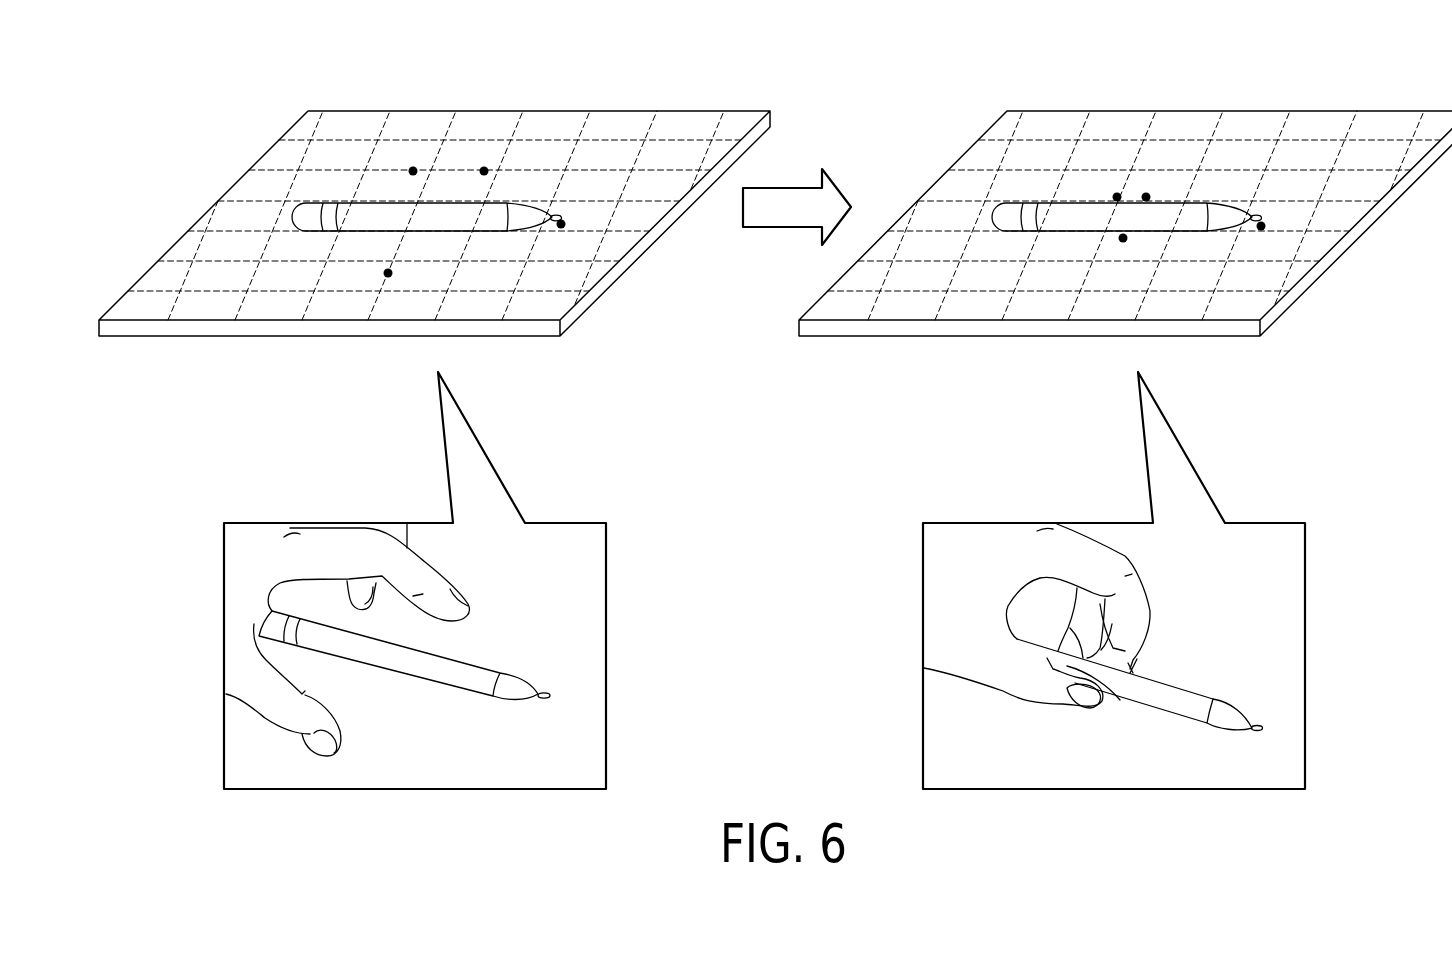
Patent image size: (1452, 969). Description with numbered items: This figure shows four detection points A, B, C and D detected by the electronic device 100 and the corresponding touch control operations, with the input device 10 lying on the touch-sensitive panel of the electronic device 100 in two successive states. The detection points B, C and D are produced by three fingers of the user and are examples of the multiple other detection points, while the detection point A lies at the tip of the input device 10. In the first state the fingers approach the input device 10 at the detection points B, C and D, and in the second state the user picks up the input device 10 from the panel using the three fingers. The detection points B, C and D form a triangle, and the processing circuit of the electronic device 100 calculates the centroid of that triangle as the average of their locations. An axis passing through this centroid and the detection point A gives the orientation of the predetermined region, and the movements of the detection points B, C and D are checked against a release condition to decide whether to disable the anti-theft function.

The input device 10 is at (378, 220).
The electronic device 100 is at (262, 337).
The detection point A is at (925, 217).
The detection point B is at (456, 203).
The detection point C is at (413, 203).
The detection point D is at (426, 231).